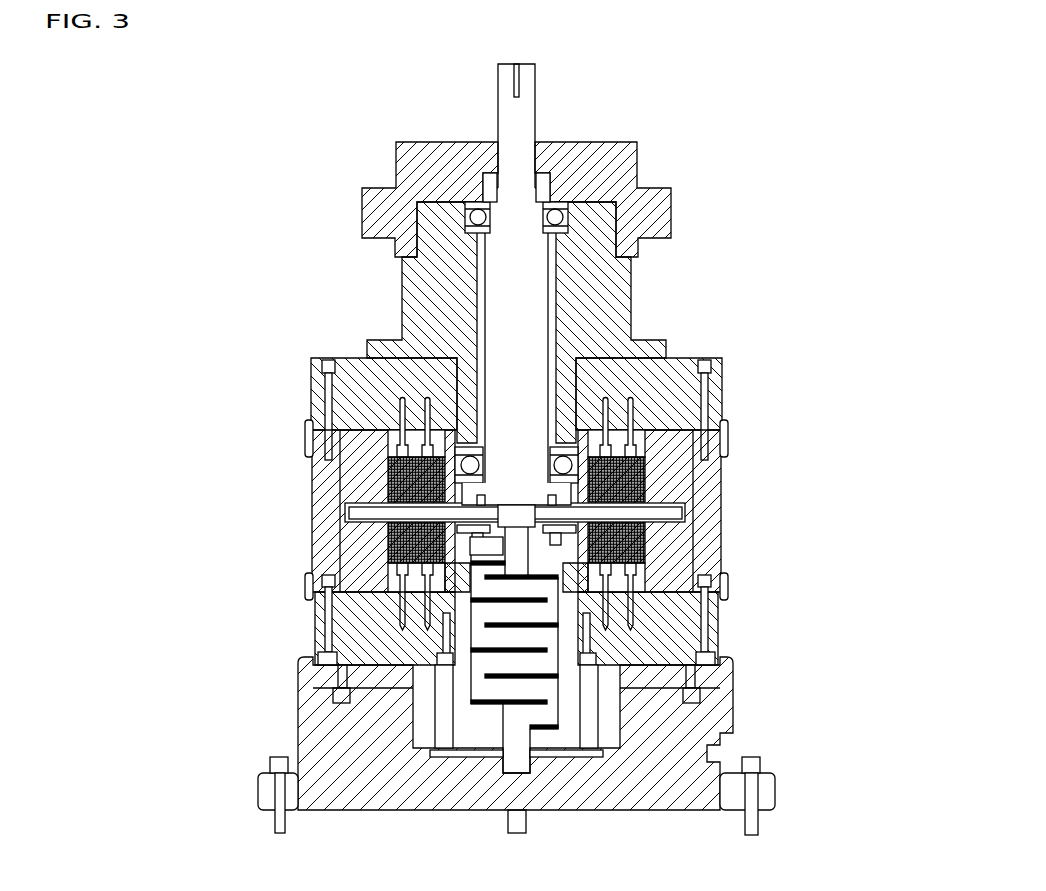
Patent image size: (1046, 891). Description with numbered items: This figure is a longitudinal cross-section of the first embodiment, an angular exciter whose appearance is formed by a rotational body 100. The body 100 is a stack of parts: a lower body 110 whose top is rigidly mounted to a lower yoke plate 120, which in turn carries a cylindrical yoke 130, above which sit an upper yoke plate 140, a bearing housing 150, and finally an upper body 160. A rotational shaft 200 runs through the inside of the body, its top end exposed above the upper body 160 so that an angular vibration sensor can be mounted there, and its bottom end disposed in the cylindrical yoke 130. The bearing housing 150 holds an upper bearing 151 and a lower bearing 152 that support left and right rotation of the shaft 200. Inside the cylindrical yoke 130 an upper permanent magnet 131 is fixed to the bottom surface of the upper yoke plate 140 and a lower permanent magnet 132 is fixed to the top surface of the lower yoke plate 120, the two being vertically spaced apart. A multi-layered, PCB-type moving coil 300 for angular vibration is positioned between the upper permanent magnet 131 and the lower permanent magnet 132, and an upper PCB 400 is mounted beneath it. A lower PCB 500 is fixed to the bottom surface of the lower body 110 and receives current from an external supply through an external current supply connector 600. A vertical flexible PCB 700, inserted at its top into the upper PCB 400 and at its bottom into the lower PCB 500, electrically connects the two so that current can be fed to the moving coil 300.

The rotational body 100 is at (158, 163).
The lower body 110 is at (307, 738).
The lower yoke plate 120 is at (318, 630).
The cylindrical yoke 130 is at (318, 518).
The upper permanent magnet 131 is at (618, 468).
The lower permanent magnet 132 is at (632, 538).
The upper yoke plate 140 is at (320, 386).
The bearing housing 150 is at (405, 300).
The upper bearing 151 is at (560, 208).
The lower bearing 152 is at (573, 458).
The upper body 160 is at (403, 172).
The rotational shaft 200 is at (523, 122).
The multi-layered moving coil 300 is at (680, 512).
The upper PCB 400 is at (608, 555).
The lower PCB 500 is at (583, 752).
The external current supply connector 600 is at (725, 752).
The vertical flexible PCB 700 is at (560, 645).